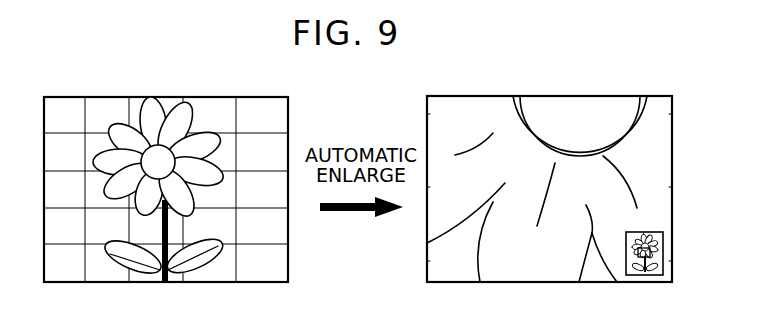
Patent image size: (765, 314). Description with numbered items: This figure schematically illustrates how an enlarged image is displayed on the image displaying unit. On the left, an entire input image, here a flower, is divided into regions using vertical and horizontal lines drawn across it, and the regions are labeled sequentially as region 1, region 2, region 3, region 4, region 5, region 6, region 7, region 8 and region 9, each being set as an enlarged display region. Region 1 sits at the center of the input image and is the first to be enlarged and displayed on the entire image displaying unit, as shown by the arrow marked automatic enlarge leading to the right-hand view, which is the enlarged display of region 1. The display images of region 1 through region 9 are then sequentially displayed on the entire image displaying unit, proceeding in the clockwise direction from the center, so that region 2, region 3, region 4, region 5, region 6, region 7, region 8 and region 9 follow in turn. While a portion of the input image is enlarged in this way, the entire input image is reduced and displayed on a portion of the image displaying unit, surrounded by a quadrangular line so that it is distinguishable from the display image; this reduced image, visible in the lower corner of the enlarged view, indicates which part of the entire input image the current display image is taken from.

The region 1 is at (413, 177).
The region 2 is at (159, 153).
The region 3 is at (200, 147).
The region 4 is at (200, 185).
The region 5 is at (201, 227).
The region 6 is at (158, 227).
The region 7 is at (117, 227).
The region 8 is at (118, 185).
The region 9 is at (118, 147).